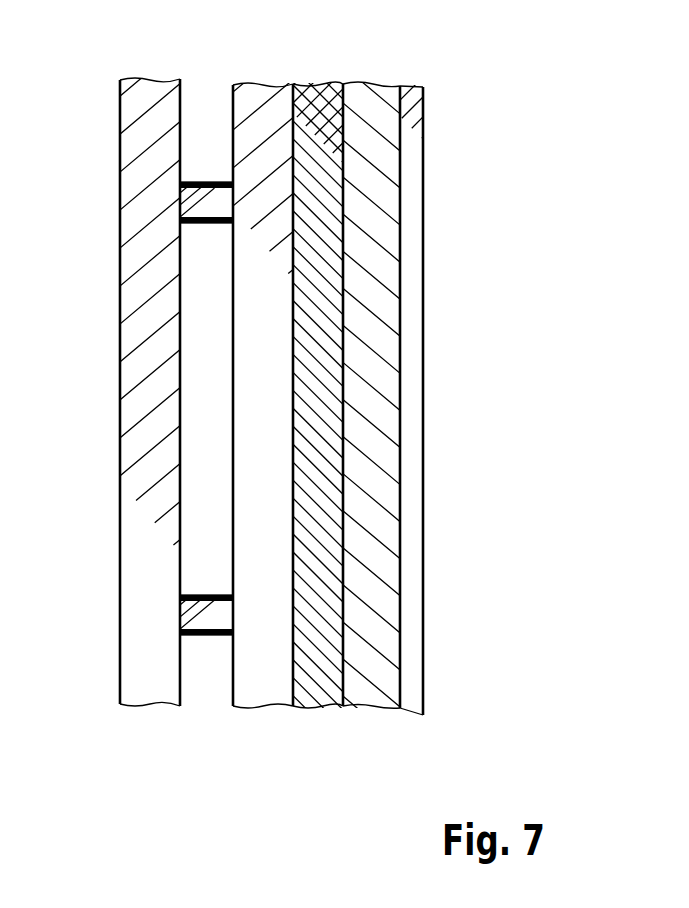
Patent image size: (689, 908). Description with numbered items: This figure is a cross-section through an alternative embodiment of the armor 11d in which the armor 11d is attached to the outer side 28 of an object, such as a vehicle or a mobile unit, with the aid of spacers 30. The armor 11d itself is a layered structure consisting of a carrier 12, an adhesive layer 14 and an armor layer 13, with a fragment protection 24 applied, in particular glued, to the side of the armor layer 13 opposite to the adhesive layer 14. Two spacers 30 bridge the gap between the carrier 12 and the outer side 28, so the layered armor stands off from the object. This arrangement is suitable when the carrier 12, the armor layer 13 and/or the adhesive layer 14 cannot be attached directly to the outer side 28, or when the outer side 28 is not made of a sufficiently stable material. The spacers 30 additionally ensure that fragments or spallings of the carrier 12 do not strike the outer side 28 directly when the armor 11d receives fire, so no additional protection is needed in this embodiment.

The armor 11d is at (462, 123).
The outer side 28 is at (130, 641).
The spacers 30 is at (218, 637).
The carrier 12 is at (258, 695).
The adhesive layer 14 is at (320, 705).
The armor layer 13 is at (368, 698).
The fragment protection 24 is at (415, 627).